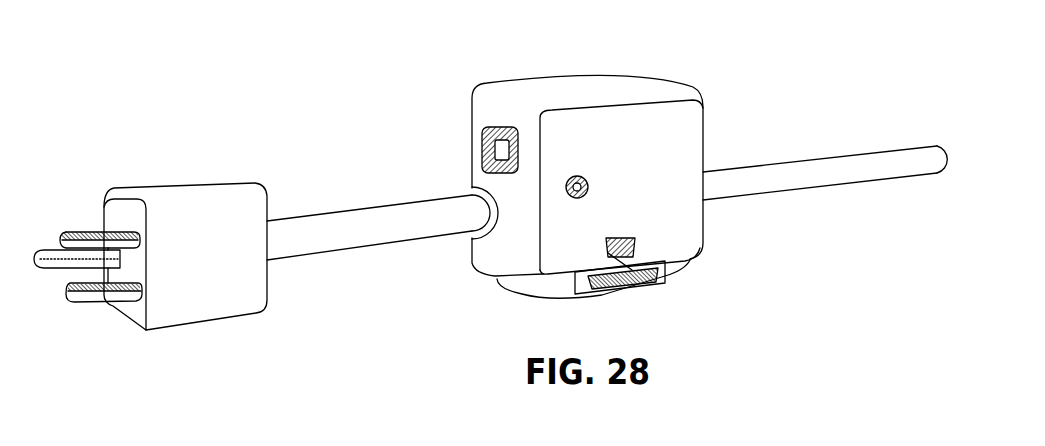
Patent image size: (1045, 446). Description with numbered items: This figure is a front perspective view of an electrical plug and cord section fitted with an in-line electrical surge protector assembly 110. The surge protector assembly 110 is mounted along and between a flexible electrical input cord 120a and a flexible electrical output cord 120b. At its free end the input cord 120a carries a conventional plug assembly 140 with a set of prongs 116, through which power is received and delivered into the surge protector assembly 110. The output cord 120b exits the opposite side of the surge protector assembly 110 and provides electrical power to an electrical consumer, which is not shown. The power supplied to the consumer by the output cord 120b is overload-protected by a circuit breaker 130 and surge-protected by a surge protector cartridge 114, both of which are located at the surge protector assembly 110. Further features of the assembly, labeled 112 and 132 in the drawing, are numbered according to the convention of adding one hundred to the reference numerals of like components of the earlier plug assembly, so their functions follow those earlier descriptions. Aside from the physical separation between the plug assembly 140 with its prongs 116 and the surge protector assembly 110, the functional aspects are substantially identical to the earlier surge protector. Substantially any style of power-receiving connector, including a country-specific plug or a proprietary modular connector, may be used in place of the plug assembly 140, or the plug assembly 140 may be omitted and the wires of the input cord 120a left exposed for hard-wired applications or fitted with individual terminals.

The in-line electrical surge protector assembly 110 is at (566, 178).
The housing 112 is at (519, 90).
The surge protector cartridge 114 is at (630, 289).
The set of prongs 116 is at (51, 289).
The flexible electrical input cord 120a is at (371, 243).
The flexible electrical output cord 120b is at (834, 157).
The circuit breaker 130 is at (490, 150).
The button 132 is at (590, 183).
The conventional plug assembly 140 is at (150, 258).